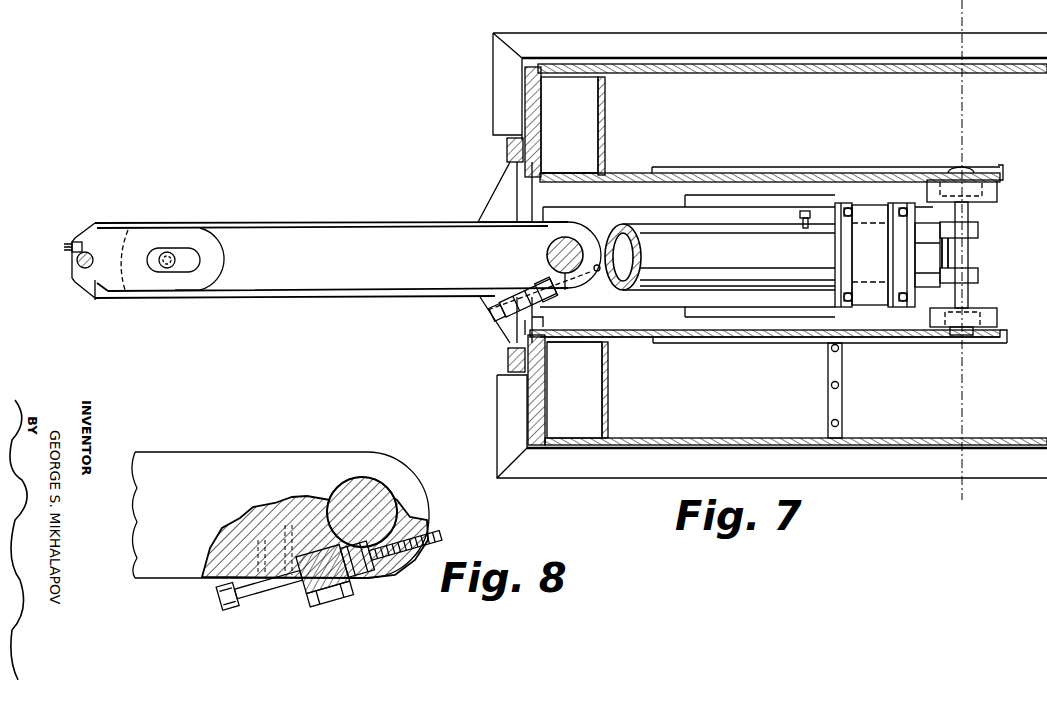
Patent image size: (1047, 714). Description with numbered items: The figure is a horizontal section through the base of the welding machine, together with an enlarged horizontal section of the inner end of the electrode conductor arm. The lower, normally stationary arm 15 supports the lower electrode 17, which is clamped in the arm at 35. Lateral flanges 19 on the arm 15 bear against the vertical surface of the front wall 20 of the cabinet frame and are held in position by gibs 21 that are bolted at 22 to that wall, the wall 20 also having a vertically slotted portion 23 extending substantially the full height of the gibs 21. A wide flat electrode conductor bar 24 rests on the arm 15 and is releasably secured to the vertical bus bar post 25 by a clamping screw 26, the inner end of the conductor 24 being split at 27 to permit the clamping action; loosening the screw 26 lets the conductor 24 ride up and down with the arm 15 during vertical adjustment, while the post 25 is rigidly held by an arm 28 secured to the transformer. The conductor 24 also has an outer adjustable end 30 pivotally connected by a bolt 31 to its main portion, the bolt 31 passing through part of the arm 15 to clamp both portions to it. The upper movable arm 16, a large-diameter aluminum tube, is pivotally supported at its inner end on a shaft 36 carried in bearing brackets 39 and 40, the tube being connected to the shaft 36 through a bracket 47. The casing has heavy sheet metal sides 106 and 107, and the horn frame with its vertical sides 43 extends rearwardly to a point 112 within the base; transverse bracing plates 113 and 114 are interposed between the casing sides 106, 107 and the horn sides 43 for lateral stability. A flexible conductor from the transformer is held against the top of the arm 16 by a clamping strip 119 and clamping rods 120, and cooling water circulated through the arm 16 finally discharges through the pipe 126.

In FIG. 7, the lower normally stationary arm 15 is at (202, 293).
In FIG. 7, the upper movable arm 16 is at (975, 13).
In FIG. 7, the lower electrode 17 is at (80, 262).
In FIG. 7, the lateral flanges 19 is at (523, 193).
In FIG. 7, the front wall 20 is at (545, 108).
In FIG. 7, the gibs 21 is at (507, 150).
In FIG. 7, the bolts 22 is at (544, 155).
In FIG. 7, the vertically slotted portion 23 is at (545, 172).
In FIG. 7, the electrode conductor bar 24 is at (318, 238).
In FIG. 8, the electrode conductor bar 24 is at (190, 468).
In FIG. 7, the vertical bus bar post 25 is at (568, 237).
In FIG. 8, the vertical bus bar post 25 is at (358, 495).
In FIG. 7, the clamping screw 26 is at (522, 292).
In FIG. 8, the clamping screw 26 is at (250, 605).
In FIG. 7, the split inner end 27 is at (580, 280).
In FIG. 8, the split inner end 27 is at (367, 578).
In FIG. 7, the arm 28 is at (668, 212).
In FIG. 7, the outer adjustable end 30 is at (118, 232).
In FIG. 7, the bolt 31 is at (170, 253).
In FIG. 7, the electrode clamp 35 is at (72, 243).
In FIG. 7, the pivot shaft 36 is at (968, 300).
In FIG. 7, the bearing bracket 39 is at (993, 316).
In FIG. 7, the bearing bracket 40 is at (988, 188).
In FIG. 7, the inner frame / horn side walls 43 is at (876, 205).
In FIG. 7, the bracket 47 is at (980, 232).
In FIG. 7, the sheet metal side 106 is at (871, 78).
In FIG. 7, the sheet metal side 107 is at (917, 440).
In FIG. 7, the rear end point of horn 112 is at (1003, 173).
In FIG. 7, the transverse bracing plate 113 is at (606, 135).
In FIG. 7, the transverse bracing plate 114 is at (608, 395).
In FIG. 7, the clamping strip 119 is at (872, 210).
In FIG. 7, the clamping rods 120 is at (901, 293).
In FIG. 7, the discharge pipe 126 is at (803, 216).